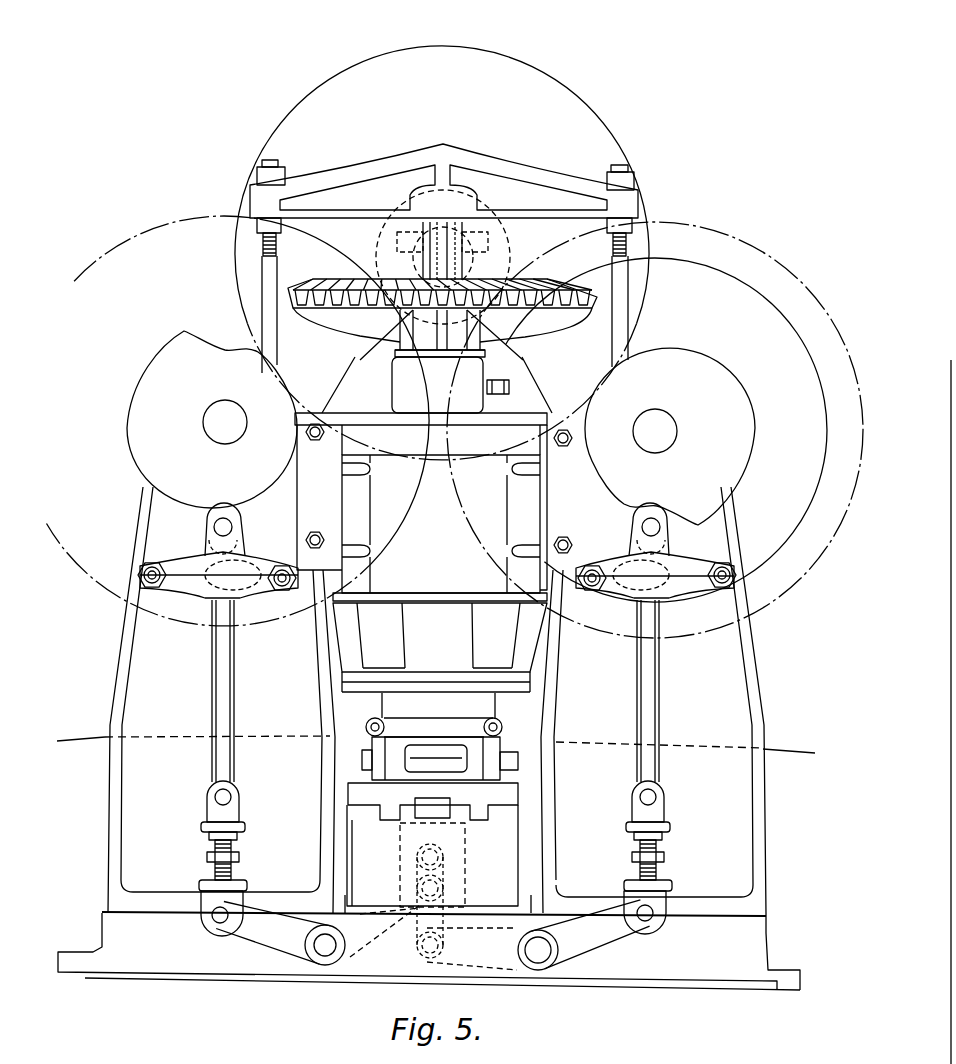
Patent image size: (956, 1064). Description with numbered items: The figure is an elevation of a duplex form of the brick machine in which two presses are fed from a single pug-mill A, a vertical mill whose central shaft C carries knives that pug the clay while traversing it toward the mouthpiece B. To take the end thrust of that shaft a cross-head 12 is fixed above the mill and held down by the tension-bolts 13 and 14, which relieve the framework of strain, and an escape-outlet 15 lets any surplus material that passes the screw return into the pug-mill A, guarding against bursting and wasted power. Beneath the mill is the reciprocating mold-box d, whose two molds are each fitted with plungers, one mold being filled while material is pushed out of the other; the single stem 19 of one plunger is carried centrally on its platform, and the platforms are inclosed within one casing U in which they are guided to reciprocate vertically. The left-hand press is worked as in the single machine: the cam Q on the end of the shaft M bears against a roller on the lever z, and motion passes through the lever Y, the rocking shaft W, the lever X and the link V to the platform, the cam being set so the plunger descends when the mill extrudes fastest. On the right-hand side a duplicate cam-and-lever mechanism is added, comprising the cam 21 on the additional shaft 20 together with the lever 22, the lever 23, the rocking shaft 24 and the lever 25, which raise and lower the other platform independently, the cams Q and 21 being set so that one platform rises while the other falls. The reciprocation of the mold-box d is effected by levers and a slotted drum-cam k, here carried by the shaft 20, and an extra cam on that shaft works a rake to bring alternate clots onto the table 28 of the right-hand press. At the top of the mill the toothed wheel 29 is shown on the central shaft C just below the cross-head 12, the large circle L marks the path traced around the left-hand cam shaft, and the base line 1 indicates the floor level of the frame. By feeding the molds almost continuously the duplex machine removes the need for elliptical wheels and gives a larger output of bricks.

The cross-head 12 is at (444, 181).
The tension-bolt 13 is at (266, 343).
The tension-bolt 14 is at (618, 333).
The central shaft C is at (460, 258).
The bevel gear 29 is at (442, 346).
The left circular path L is at (173, 225).
The drum-cam k is at (655, 430).
The cam Q is at (212, 419).
The shaft M is at (225, 422).
The cam 21 is at (670, 436).
The additional shaft 20 is at (655, 431).
The pug-mill A is at (433, 507).
The escape-outlet 15 is at (440, 647).
The mouthpiece B is at (427, 733).
The reciprocating mold-box d is at (440, 758).
The single stem 19 is at (430, 813).
The casing U is at (432, 856).
The link V is at (420, 870).
The lever X is at (385, 931).
The lever 25 is at (472, 949).
The lever z is at (225, 677).
The lever 22 is at (650, 680).
The lever Y is at (273, 933).
The rocking shaft W is at (325, 945).
The lever 23 is at (591, 934).
The rocking shaft 24 is at (538, 950).
The left floor line 1 is at (193, 730).
The table 28 is at (685, 741).